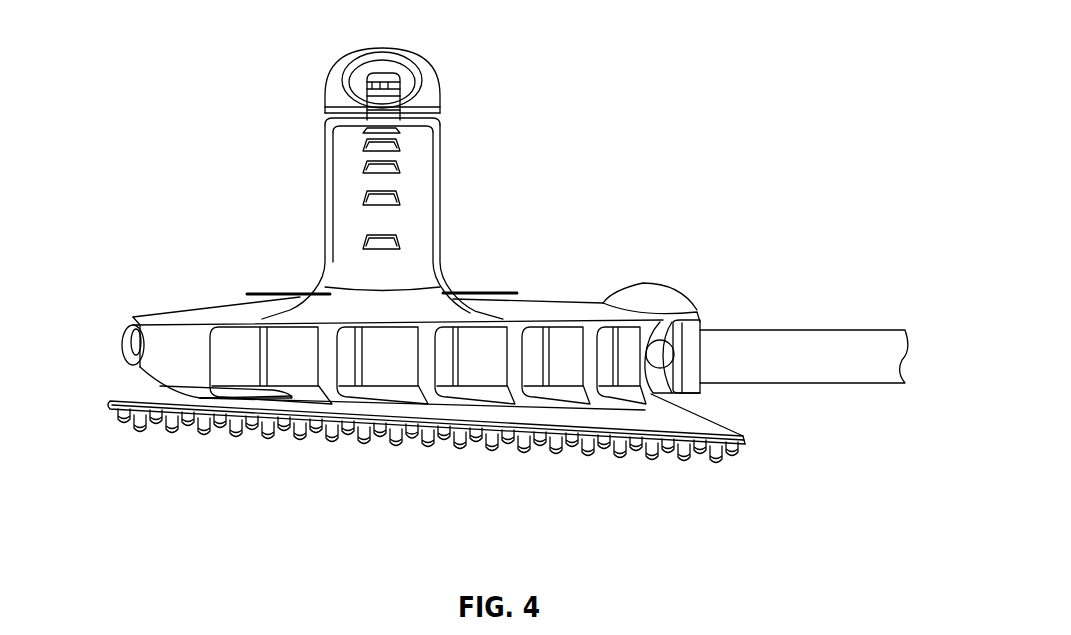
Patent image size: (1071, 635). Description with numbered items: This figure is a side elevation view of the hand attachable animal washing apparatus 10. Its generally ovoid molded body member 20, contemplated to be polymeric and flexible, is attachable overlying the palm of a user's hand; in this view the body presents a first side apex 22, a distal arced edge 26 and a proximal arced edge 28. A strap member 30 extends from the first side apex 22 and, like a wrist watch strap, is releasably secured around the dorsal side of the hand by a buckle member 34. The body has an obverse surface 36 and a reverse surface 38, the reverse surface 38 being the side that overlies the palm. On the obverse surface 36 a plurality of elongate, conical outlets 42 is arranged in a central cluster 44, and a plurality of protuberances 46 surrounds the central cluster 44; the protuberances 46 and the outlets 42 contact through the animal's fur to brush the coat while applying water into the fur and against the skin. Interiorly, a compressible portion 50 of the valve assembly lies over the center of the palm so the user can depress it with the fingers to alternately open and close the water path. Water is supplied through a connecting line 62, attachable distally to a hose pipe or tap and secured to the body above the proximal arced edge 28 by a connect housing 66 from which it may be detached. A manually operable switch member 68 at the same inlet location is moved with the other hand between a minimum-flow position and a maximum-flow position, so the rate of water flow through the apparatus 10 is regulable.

The hand attachable animal washing apparatus 10 is at (680, 68).
The molded body member 20 is at (540, 292).
The first side apex 22 is at (410, 410).
The distal arced edge 26 is at (112, 407).
The proximal arced edge 28 is at (743, 437).
The strap member 30 is at (412, 183).
The buckle member 34 is at (412, 72).
The obverse surface 36 is at (243, 457).
The reverse surface 38 is at (185, 310).
The outlets 42 is at (495, 456).
The central cluster 44 is at (430, 462).
The protuberances 46 is at (705, 457).
The compressible portion 50 is at (123, 343).
The connecting line 62 is at (800, 342).
The connect housing 66 is at (692, 332).
The manually operable switch member 68 is at (678, 285).